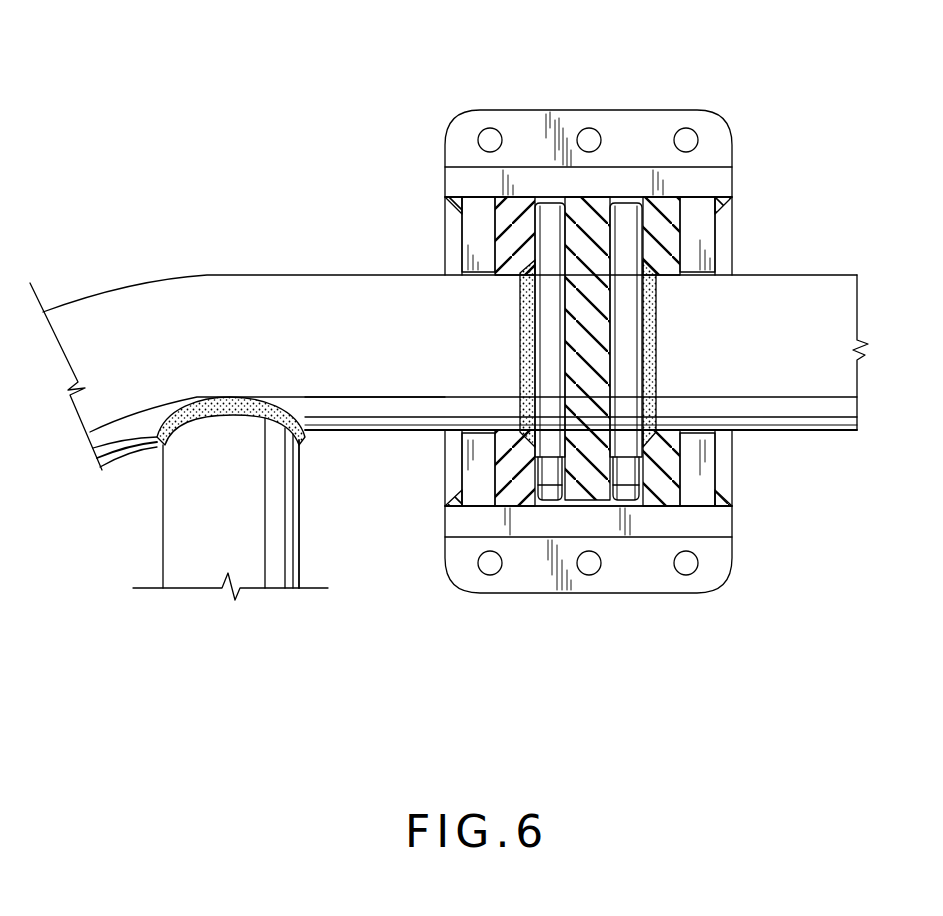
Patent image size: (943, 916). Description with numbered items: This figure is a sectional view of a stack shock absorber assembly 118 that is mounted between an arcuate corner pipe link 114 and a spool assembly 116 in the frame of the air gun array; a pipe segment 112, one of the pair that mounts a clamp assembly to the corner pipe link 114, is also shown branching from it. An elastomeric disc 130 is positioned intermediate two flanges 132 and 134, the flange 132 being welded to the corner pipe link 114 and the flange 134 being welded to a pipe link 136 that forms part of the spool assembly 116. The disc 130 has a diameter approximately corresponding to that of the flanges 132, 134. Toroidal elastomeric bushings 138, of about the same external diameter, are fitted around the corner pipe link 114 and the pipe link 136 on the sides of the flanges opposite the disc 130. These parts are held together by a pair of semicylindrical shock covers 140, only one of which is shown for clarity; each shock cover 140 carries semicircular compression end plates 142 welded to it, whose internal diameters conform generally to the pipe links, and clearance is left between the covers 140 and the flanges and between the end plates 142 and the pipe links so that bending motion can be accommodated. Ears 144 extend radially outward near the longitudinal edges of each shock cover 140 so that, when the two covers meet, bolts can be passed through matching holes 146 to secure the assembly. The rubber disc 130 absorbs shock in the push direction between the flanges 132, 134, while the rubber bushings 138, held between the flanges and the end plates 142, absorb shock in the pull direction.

The pipe segment 112 is at (275, 508).
The corner pipe link 114 is at (207, 290).
The spool assembly 116 is at (834, 431).
The shock absorber assembly 118 is at (722, 109).
The elastomeric disc 130 is at (589, 212).
The flange 132 is at (548, 217).
The flange 134 is at (623, 215).
The pipe link 136 is at (775, 373).
The toroidal elastomeric bushing 138 is at (523, 487).
The semicylindrical shock cover 140 is at (735, 176).
The semicircular compression end plate 142 is at (473, 240).
The ear 144 is at (477, 118).
The hole 146 is at (488, 137).